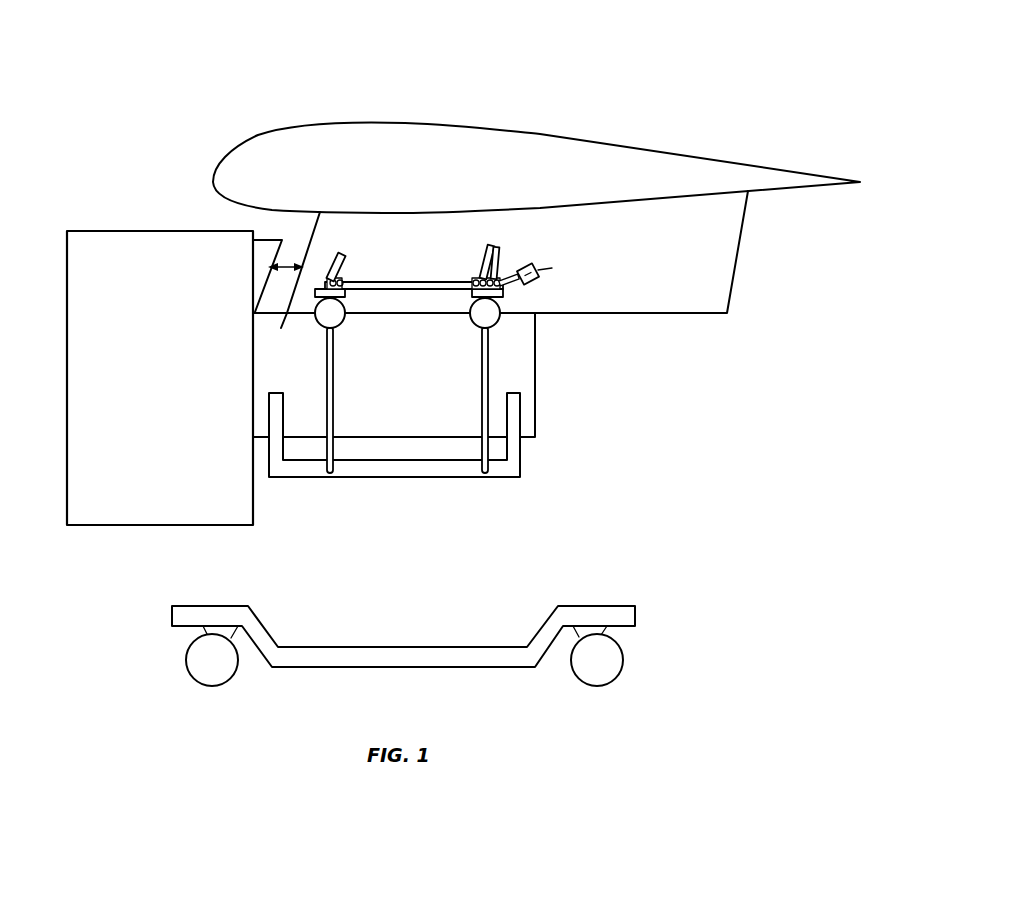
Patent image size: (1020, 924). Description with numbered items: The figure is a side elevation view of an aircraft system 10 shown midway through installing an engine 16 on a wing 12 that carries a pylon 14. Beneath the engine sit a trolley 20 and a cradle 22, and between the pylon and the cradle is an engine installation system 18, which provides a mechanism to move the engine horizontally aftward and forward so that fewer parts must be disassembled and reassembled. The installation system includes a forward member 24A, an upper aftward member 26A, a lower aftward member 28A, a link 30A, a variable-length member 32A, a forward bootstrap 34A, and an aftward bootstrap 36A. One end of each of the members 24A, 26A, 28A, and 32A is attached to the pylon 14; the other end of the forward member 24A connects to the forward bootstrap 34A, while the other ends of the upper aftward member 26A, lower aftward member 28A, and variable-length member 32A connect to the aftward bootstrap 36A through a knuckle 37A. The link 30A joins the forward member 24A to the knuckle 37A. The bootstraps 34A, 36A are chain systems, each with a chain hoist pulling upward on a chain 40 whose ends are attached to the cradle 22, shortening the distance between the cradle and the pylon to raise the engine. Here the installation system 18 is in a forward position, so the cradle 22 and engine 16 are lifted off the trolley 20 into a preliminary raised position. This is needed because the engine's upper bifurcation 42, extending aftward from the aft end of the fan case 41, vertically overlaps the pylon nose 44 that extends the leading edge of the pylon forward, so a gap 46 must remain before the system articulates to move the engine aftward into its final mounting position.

The aircraft system 10 is at (670, 65).
The wing 12 is at (617, 143).
The pylon 14 is at (738, 263).
The engine 16 is at (301, 364).
The engine installation system 18 is at (477, 281).
The trolley 20 is at (637, 615).
The cradle 22 is at (530, 465).
The forward member 24A is at (347, 268).
The upper aftward member 26A is at (484, 258).
The lower aftward member 28A is at (499, 268).
The link 30A is at (417, 281).
The variable-length member 32A is at (552, 269).
The forward bootstrap 34A is at (321, 329).
The aftward bootstrap 36A is at (468, 335).
The knuckle 37A is at (503, 291).
The chain 40 is at (337, 398).
The fan case 41 is at (115, 230).
The upper bifurcation 42 is at (276, 239).
The pylon nose 44 is at (298, 305).
The gap 46 is at (298, 262).